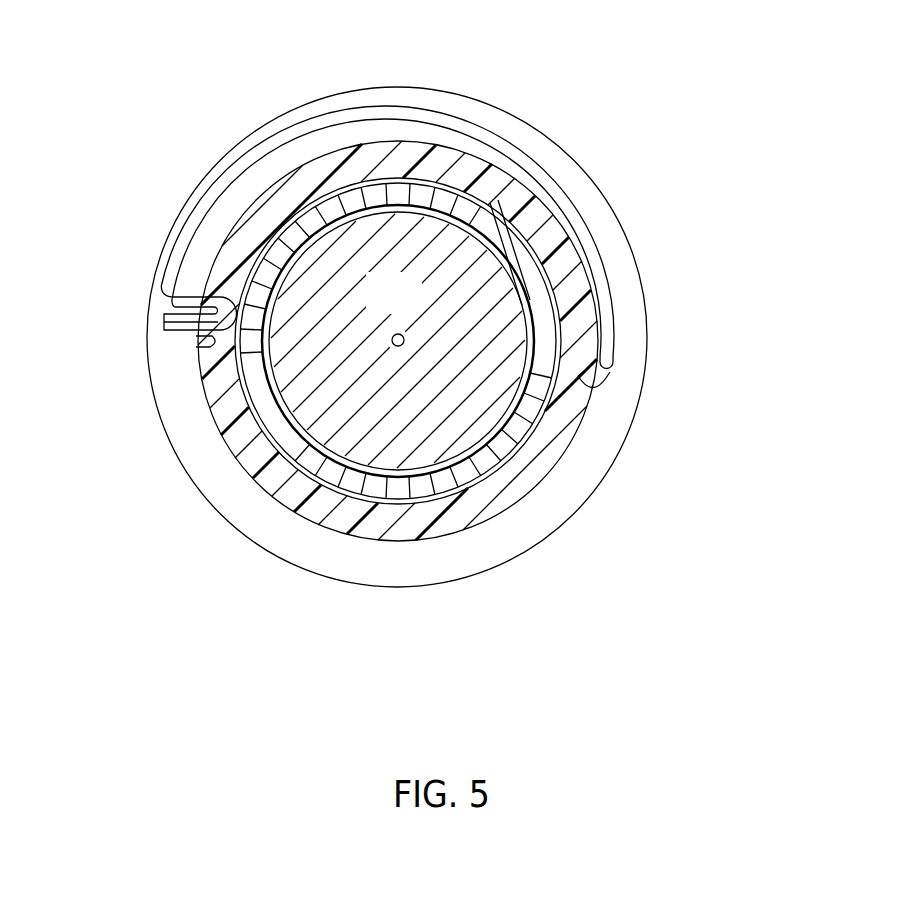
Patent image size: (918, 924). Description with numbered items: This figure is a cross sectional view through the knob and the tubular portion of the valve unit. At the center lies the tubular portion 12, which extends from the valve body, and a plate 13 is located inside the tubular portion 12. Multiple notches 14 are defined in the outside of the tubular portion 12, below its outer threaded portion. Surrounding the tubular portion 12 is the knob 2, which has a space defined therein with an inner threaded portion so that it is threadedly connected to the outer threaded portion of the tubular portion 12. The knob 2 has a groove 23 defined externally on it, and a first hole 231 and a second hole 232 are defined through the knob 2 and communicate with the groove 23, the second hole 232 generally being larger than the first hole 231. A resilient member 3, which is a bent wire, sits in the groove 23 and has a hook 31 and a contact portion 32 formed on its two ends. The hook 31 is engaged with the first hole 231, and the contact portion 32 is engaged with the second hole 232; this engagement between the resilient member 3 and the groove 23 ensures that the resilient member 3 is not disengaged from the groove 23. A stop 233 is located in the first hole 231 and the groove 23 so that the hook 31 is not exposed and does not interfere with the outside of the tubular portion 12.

The knob 2 is at (402, 342).
The groove 23 is at (633, 303).
The first hole 231 is at (603, 372).
The second hole 232 is at (205, 345).
The stop 233 is at (563, 335).
The resilient member 3 is at (400, 184).
The hook 31 is at (607, 353).
The contact portion 32 is at (165, 319).
The tubular portion 12 is at (372, 508).
The plate 13 is at (416, 310).
The notches 14 is at (240, 465).